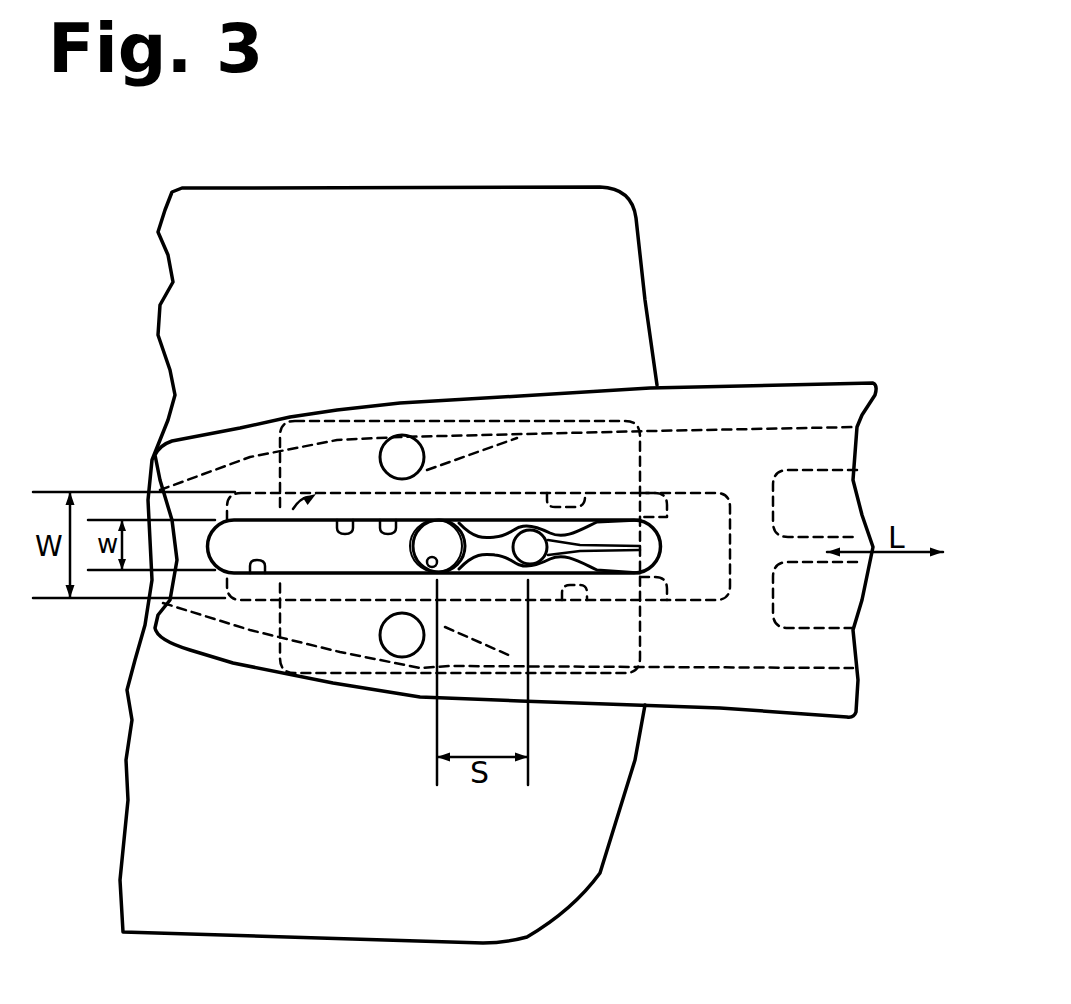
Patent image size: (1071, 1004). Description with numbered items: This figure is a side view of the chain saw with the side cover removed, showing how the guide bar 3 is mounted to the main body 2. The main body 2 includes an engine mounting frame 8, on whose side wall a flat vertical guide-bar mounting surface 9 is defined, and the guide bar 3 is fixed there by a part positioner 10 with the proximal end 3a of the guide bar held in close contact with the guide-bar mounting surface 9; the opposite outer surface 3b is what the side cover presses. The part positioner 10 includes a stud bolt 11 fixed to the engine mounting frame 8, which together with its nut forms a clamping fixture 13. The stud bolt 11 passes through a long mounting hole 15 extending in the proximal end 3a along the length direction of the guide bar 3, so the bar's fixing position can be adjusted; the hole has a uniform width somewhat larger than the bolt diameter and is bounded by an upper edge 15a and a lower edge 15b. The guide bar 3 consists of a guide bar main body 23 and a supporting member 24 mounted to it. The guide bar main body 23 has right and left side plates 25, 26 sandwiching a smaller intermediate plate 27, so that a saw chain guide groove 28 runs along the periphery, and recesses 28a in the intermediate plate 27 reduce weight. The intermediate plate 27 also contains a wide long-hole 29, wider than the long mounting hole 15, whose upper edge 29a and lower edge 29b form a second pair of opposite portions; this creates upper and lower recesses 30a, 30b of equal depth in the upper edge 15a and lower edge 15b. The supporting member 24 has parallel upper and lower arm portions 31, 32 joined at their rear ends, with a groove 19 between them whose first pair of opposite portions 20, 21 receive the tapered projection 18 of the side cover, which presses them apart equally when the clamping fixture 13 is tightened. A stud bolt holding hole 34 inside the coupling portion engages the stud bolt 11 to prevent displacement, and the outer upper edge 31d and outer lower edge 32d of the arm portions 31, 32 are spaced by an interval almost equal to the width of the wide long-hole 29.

The main body 2 is at (498, 528).
The guide bar 3 is at (746, 388).
The proximal end 3a is at (465, 410).
The outer surface 3b is at (330, 620).
The engine mounting frame 8 is at (352, 230).
The guide-bar mounting surface 9 is at (303, 550).
The part positioner 10 is at (612, 386).
The stud bolt 11 is at (432, 549).
The clamping fixture 13 is at (432, 549).
The long mounting hole 15 is at (337, 520).
The upper edge 15a is at (373, 520).
The lower edge 15b is at (243, 575).
The tapered projection 18 is at (510, 548).
The groove 19 is at (612, 533).
The first opposite portion 20 is at (597, 539).
The first opposite portion 21 is at (635, 566).
The guide bar main body 23 is at (587, 397).
The supporting member 24 is at (380, 552).
The side plate 25 is at (712, 690).
The side plate 26 is at (712, 690).
The intermediate plate 27 is at (773, 647).
The saw chain guide groove 28 is at (822, 410).
The recess 28a is at (823, 470).
The wide long-hole 29 is at (266, 495).
The upper edge 29a is at (543, 493).
The lower edge 29b is at (583, 600).
The upper recess 30a is at (585, 497).
The lower recess 30b is at (610, 590).
The upper arm portion 31 is at (622, 488).
The outer upper edge 31d is at (522, 493).
The lower arm portion 32 is at (630, 603).
The outer lower edge 32d is at (510, 607).
The stud bolt holding hole 34 is at (428, 567).